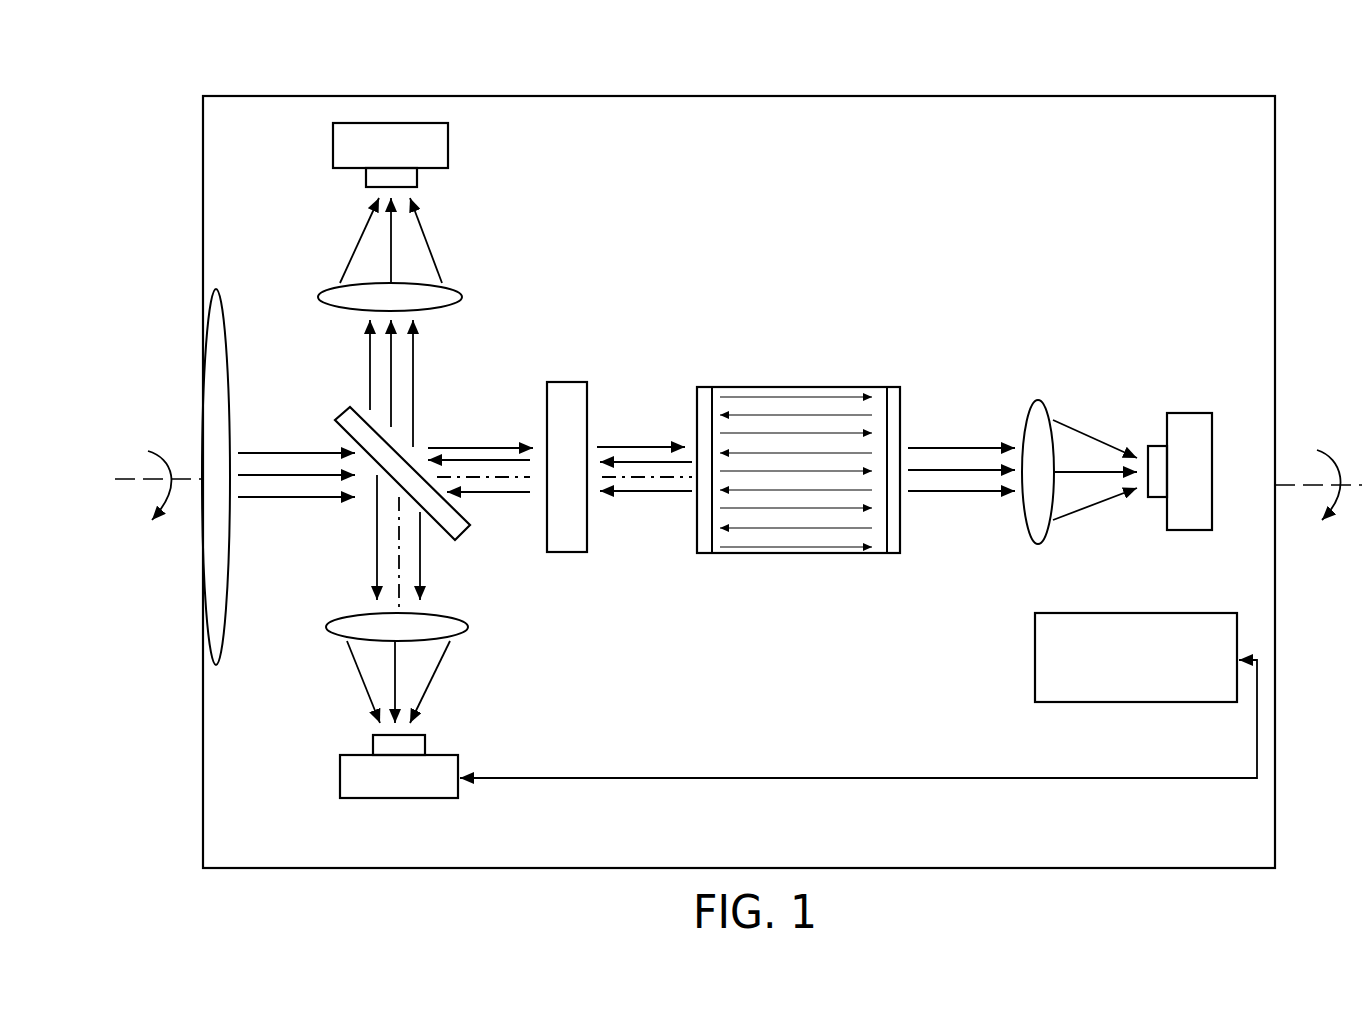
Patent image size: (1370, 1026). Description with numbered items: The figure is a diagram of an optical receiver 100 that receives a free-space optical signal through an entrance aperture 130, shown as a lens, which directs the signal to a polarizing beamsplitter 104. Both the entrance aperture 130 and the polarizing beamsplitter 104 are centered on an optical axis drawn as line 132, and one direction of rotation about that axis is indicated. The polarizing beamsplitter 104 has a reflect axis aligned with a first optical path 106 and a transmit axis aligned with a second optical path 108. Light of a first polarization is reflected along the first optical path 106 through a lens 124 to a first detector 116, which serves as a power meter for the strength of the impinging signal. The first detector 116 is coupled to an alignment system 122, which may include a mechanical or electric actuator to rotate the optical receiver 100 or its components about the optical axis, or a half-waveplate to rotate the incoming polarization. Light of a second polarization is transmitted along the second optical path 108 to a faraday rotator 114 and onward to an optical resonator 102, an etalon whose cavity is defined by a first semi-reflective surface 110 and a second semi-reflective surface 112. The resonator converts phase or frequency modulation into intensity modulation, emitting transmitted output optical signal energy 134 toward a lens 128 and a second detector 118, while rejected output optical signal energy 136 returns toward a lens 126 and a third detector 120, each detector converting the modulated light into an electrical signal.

The optical receiver 100 is at (1042, 76).
The optical resonator 102 is at (836, 418).
The polarizing beamsplitter 104 is at (350, 407).
The first optical path 106 is at (400, 523).
The second optical path 108 is at (498, 475).
The first semi-reflective surface 110 is at (890, 388).
The second semi-reflective surface 112 is at (707, 384).
The faraday rotator 114 is at (568, 382).
The first detector 116 is at (457, 755).
The second detector 118 is at (1170, 412).
The third detector 120 is at (448, 141).
The alignment system 122 is at (1035, 700).
The lens 124 is at (468, 625).
The lens 126 is at (462, 297).
The lens 128 is at (1038, 400).
The entrance aperture 130 is at (216, 290).
The optical axis 132 is at (142, 478).
The transmitted output optical signal energy 134 is at (938, 432).
The rejected output optical signal energy 136 is at (641, 497).